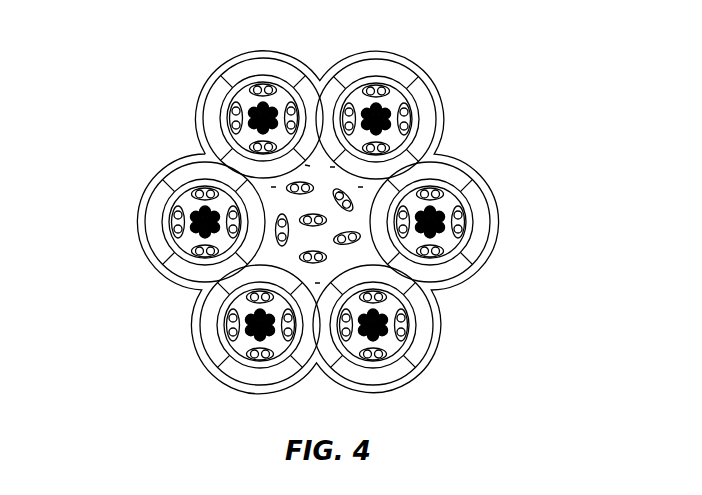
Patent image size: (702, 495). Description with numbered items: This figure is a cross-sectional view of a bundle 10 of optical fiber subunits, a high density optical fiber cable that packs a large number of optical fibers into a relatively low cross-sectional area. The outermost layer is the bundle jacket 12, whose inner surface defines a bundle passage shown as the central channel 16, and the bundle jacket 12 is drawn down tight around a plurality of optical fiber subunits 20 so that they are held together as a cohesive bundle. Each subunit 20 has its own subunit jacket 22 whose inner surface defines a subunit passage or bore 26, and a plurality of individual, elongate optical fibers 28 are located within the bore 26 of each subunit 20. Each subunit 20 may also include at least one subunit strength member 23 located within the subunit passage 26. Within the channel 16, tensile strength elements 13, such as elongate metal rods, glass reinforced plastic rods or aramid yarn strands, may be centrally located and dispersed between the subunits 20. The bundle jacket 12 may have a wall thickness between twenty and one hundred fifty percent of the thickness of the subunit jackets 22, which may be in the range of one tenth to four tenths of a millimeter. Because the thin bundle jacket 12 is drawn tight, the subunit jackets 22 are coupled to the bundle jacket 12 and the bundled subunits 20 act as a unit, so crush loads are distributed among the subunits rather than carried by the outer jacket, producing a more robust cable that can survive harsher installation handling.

The bundle 10 is at (138, 82).
The bundle jacket 12 is at (373, 52).
The tensile strength elements 13 is at (352, 252).
The central channel 16 is at (278, 252).
The optical fiber subunits 20 is at (412, 190).
The subunit jacket 22 is at (450, 173).
The subunit strength member 23 is at (447, 264).
The bore 26 is at (393, 350).
The optical fibers 28 is at (449, 204).